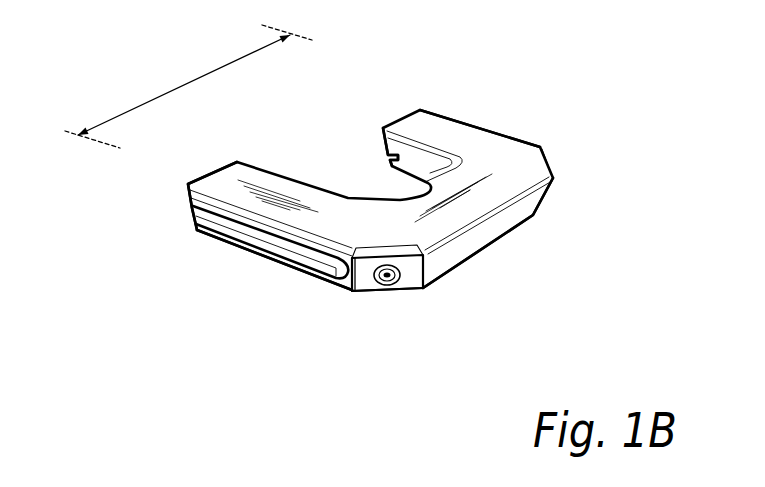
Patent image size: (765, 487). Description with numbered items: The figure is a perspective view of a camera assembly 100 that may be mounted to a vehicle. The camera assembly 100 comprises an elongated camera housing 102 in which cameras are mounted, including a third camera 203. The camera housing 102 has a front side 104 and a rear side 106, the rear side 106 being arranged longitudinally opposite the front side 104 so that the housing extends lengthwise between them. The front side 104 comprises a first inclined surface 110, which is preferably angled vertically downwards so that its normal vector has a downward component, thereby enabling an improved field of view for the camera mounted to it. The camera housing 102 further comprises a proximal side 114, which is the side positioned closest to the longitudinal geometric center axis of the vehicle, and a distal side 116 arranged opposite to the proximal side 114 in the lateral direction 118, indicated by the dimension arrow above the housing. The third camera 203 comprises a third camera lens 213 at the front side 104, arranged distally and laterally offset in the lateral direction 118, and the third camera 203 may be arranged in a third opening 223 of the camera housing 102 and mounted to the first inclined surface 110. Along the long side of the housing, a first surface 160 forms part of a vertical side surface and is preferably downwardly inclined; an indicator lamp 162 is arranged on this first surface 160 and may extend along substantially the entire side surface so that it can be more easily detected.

The camera assembly 100 is at (520, 80).
The camera housing 102 is at (480, 192).
The front side 104 is at (550, 165).
The rear side 106 is at (202, 175).
The first inclined surface 110 is at (360, 284).
The proximal side 114 is at (470, 124).
The distal side 116 is at (237, 208).
The lateral direction 118 is at (226, 66).
The first surface 160 is at (277, 233).
The indicator lamp 162 is at (318, 263).
The third camera 203 is at (425, 289).
The third camera lens 213 is at (393, 290).
The third opening 223 is at (383, 262).